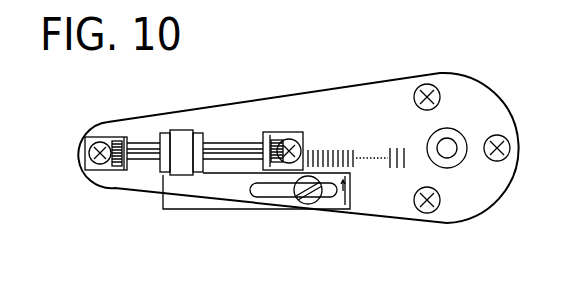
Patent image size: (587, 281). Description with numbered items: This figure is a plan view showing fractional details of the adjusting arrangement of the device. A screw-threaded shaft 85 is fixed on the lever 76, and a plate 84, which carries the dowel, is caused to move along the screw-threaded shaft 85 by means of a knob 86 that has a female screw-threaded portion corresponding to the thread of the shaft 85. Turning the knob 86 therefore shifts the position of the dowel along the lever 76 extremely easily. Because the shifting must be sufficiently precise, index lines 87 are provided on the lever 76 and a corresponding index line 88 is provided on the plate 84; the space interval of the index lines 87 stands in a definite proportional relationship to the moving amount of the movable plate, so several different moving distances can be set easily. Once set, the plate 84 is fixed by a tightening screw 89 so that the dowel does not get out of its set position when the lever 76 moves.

The lever 76 is at (500, 173).
The plate 84 is at (207, 195).
The screw-threaded shaft 85 is at (232, 143).
The knob 86 is at (186, 130).
The index lines 87 is at (332, 150).
The index line 88 is at (350, 198).
The tightening screw 89 is at (310, 205).